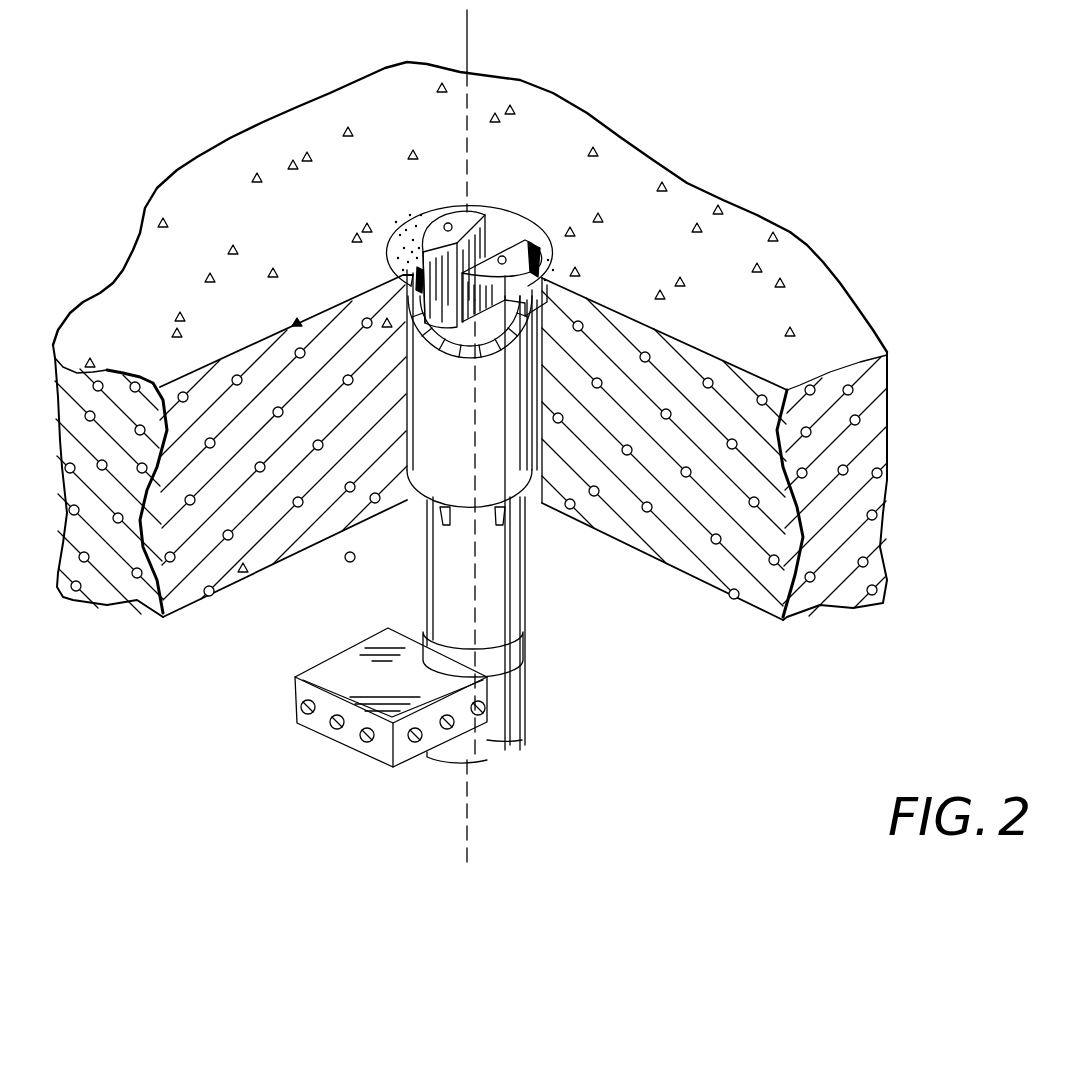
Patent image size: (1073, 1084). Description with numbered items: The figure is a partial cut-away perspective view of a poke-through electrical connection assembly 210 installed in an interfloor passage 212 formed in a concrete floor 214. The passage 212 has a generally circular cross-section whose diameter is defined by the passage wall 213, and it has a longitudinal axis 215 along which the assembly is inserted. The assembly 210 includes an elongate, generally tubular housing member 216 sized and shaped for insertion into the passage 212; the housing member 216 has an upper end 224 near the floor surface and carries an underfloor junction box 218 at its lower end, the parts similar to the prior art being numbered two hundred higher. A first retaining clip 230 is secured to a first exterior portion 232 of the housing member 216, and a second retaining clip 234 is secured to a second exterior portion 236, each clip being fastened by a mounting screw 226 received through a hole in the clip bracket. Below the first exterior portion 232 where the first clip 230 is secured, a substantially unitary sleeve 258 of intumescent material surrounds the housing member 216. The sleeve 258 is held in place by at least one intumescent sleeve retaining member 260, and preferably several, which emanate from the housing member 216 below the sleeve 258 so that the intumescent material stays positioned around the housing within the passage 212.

The poke-through assembly 210 is at (526, 482).
The interfloor passage 212 is at (418, 493).
The passage wall 213 is at (480, 197).
The floor 214 is at (742, 426).
The longitudinal axis 215 is at (467, 52).
The housing member 216 is at (524, 596).
The underfloor junction box 218 is at (337, 745).
The upper end of housing member 224 is at (499, 246).
The mounting screw 226 is at (446, 222).
The first retaining clip 230 is at (543, 262).
The first exterior portion 232 is at (528, 247).
The second retaining clip 234 is at (422, 270).
The second exterior portion 236 is at (421, 237).
The sleeve of intumescent material 258 is at (503, 480).
The intumescent sleeve retaining member 260 is at (498, 527).